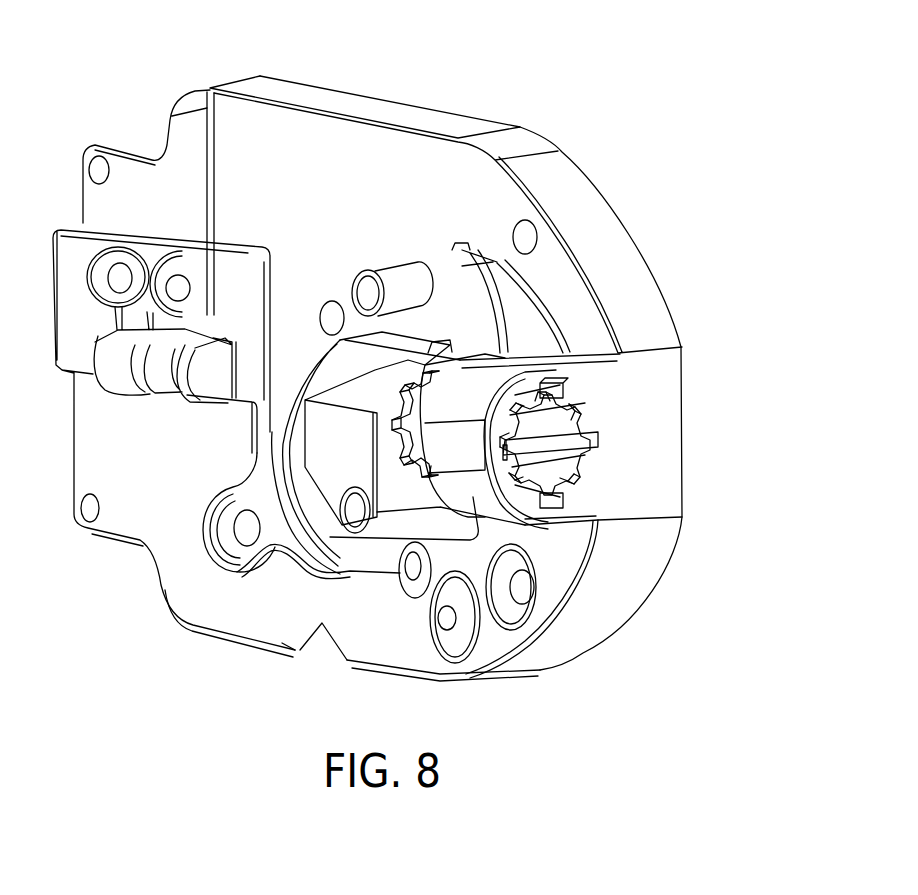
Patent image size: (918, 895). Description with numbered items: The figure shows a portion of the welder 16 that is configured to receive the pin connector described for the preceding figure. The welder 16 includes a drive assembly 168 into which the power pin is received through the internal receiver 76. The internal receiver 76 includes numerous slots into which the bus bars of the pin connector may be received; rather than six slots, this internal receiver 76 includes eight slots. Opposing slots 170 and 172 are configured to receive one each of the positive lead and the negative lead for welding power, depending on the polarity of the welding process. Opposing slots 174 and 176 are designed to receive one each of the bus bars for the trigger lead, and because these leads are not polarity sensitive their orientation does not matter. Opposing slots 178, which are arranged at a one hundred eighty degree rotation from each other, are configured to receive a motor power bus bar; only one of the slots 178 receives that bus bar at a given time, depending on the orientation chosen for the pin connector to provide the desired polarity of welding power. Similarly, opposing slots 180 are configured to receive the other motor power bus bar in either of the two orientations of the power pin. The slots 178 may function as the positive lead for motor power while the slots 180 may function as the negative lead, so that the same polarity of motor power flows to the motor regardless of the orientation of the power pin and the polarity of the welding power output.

The welder 16 is at (563, 98).
The internal receiver 76 is at (460, 397).
The drive assembly 168 is at (597, 217).
The opposing slot 170 is at (551, 382).
The opposing slot 172 is at (551, 508).
The opposing slot 174 is at (485, 455).
The opposing slot 176 is at (600, 438).
The opposing slots 178 is at (585, 400).
The opposing slots 180 is at (520, 403).